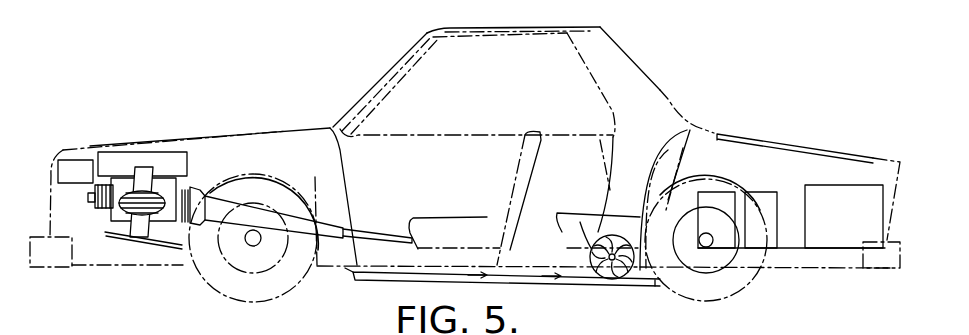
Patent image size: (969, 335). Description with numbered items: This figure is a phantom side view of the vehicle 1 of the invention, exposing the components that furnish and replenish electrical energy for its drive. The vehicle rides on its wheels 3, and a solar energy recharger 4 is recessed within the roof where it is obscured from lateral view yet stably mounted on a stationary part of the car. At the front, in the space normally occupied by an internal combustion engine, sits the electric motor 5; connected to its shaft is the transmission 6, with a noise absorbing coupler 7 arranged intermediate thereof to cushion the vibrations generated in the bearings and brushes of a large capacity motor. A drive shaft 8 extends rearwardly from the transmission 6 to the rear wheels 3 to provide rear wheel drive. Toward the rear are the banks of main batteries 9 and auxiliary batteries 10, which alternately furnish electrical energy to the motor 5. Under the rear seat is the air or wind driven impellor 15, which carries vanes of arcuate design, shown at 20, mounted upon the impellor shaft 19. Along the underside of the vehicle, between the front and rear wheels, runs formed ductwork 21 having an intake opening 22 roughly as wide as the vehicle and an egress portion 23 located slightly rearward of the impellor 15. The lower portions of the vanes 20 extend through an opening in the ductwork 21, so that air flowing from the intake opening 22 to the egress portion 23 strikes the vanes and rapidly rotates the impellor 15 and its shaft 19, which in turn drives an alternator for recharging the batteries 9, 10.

The vehicle 1 is at (665, 82).
The wheels 3 is at (283, 289).
The solar energy recharger 4 is at (453, 28).
The electric motor 5 is at (133, 167).
The transmission 6 is at (342, 229).
The noise absorbing coupler 7 is at (195, 186).
The drive shaft 8 is at (375, 233).
The main batteries 9 is at (730, 180).
The auxiliary batteries 10 is at (773, 180).
The air or wind driven impellor 15 is at (630, 279).
The shaft of the impellor 19 is at (603, 284).
The arcuate vanes 20 is at (580, 222).
The ductwork 21 is at (402, 277).
The intake opening 22 is at (347, 272).
The egress portion 23 is at (648, 275).